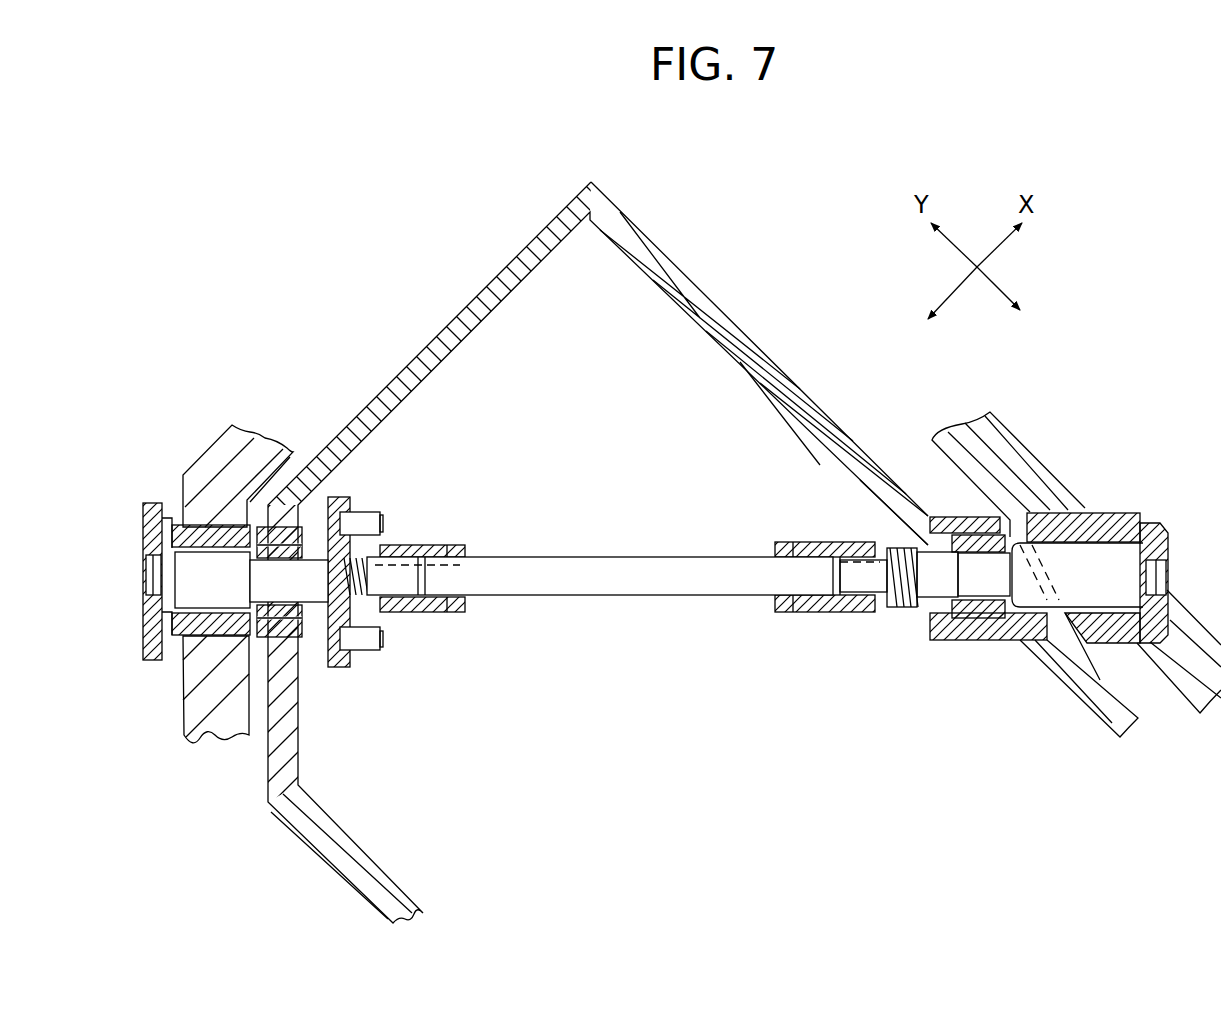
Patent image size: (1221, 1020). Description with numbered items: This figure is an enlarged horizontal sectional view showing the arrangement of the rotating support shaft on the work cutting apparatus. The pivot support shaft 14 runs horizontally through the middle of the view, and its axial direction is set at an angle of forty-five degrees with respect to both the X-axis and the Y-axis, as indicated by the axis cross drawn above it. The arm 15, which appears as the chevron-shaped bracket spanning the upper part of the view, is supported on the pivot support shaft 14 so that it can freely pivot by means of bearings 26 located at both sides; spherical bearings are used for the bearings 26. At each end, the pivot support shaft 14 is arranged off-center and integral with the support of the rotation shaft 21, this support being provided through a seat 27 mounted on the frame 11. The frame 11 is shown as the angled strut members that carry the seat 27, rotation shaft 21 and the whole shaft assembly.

The frame 11 is at (218, 450).
The pivot support shaft 14 is at (578, 572).
The arm 15 is at (410, 352).
The rotation shaft 21 is at (222, 603).
The bearings 26 is at (307, 640).
The seat 27 is at (205, 520).